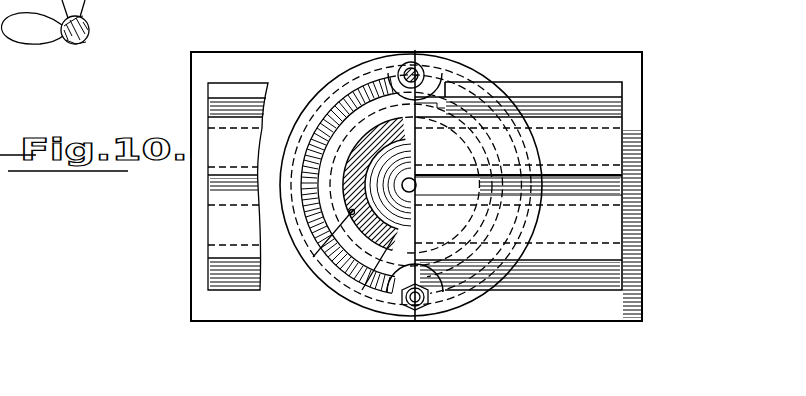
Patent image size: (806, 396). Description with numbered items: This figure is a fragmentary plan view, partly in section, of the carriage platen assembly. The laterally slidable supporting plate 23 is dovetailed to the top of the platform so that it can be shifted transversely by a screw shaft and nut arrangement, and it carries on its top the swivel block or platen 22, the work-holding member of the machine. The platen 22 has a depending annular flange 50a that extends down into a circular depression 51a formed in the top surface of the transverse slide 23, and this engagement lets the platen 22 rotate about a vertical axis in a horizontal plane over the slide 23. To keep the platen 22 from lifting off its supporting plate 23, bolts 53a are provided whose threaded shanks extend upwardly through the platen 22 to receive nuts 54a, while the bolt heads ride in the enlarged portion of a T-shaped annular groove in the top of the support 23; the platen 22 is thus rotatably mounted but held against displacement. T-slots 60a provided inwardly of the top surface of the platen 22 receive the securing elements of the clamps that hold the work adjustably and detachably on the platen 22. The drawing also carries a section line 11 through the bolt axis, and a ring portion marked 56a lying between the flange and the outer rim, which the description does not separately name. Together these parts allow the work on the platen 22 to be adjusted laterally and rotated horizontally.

The section line 11- 11 is at (398, 333).
The swivel block or platen 22 is at (608, 222).
The laterally slidable supporting plate 23 is at (578, 58).
The depending annular flange 50a is at (318, 274).
The circular depression 51a is at (313, 252).
The bolts 53a is at (392, 317).
The nuts 54a is at (450, 313).
The toothed ring 56a is at (357, 82).
The T-slots 60a is at (622, 177).